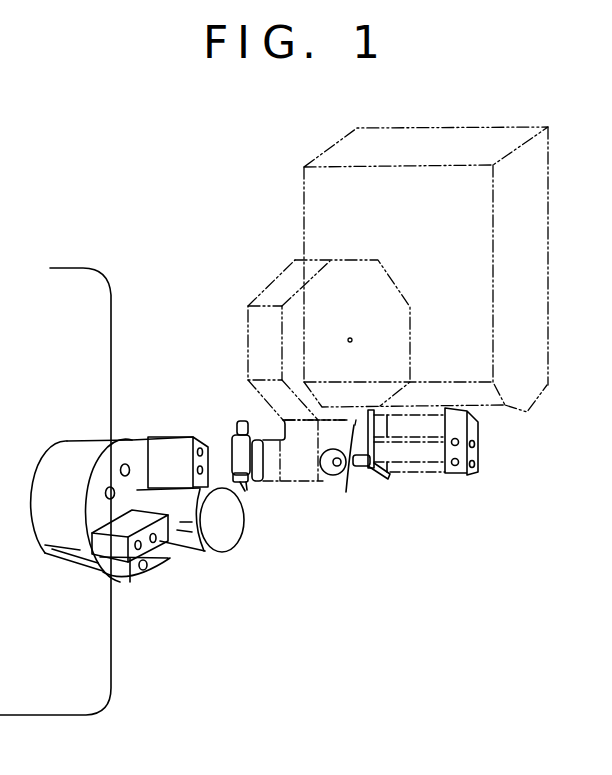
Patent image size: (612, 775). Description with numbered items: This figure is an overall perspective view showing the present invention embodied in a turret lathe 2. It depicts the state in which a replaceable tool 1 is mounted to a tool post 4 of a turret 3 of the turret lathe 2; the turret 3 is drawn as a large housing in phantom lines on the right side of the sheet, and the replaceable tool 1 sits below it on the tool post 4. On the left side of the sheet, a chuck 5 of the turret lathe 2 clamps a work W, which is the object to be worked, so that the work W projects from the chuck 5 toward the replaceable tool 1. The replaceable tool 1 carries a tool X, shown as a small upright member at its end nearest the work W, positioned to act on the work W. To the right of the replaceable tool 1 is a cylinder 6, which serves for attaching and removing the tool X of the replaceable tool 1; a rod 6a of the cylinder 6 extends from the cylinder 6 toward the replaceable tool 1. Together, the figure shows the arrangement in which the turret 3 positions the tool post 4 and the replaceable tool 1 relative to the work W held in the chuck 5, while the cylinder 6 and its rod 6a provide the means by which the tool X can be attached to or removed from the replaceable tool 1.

The replaceable tool 1 is at (303, 487).
The turret lathe 2 is at (183, 388).
The turret 3 is at (283, 271).
The tool post 4 is at (355, 422).
The chuck 5 is at (127, 576).
The cylinder 6 is at (428, 476).
The rod 6a is at (358, 467).
The work W is at (190, 556).
The tool X is at (245, 486).